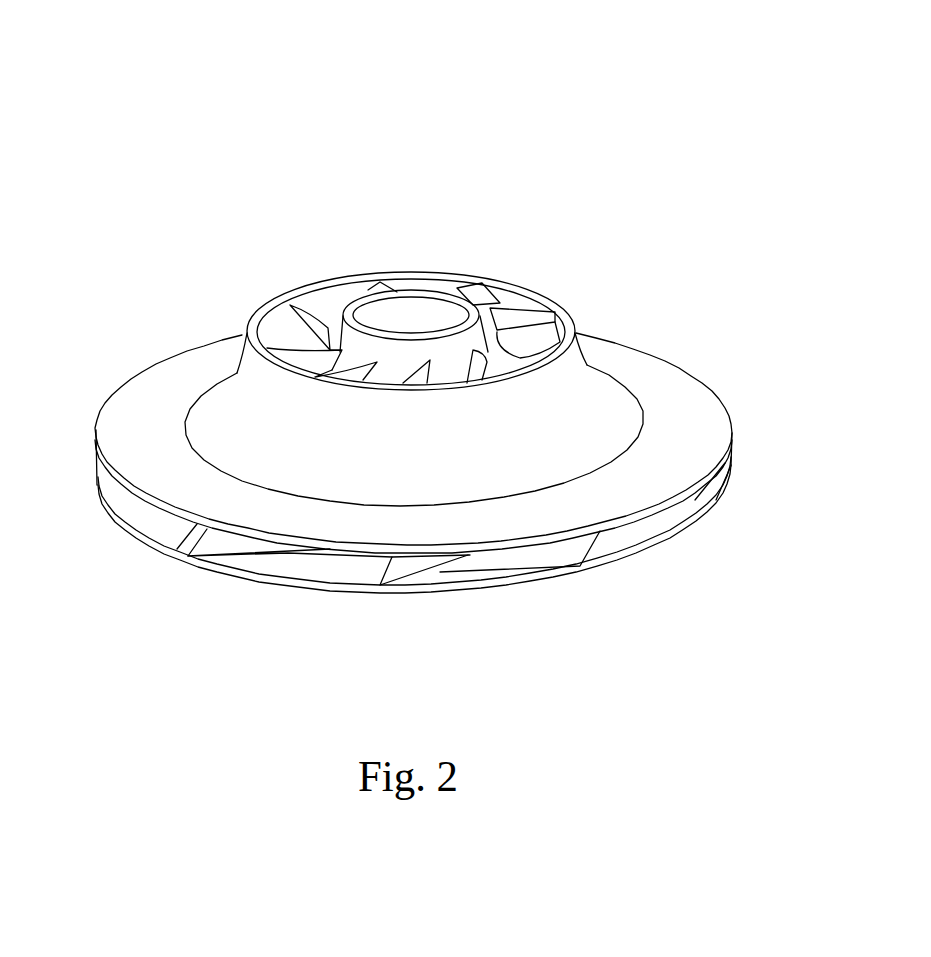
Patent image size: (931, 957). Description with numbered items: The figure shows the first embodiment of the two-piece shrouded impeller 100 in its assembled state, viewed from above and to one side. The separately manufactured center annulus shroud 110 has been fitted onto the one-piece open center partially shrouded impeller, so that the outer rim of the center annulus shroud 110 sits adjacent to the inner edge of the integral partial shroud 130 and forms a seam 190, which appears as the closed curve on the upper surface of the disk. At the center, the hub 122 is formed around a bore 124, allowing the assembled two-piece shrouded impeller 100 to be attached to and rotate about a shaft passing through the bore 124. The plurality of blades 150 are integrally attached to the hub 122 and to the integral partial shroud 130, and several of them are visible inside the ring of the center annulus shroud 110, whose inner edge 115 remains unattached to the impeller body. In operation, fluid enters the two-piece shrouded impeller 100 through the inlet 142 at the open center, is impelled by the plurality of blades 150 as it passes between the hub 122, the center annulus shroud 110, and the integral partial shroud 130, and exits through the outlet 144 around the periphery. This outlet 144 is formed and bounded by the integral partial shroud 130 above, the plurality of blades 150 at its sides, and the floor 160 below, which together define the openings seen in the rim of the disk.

The two-piece shrouded impeller 100 is at (166, 92).
The center annulus shroud 110 is at (568, 392).
The inner edge 115 is at (567, 308).
The hub 122 is at (347, 308).
The bore 124 is at (428, 310).
The integral partial shroud 130 is at (667, 445).
The inlet 142 is at (323, 298).
The outlet 144 is at (743, 472).
The plurality of blades 150 is at (518, 312).
The floor 160 is at (627, 558).
The seam 190 is at (192, 410).